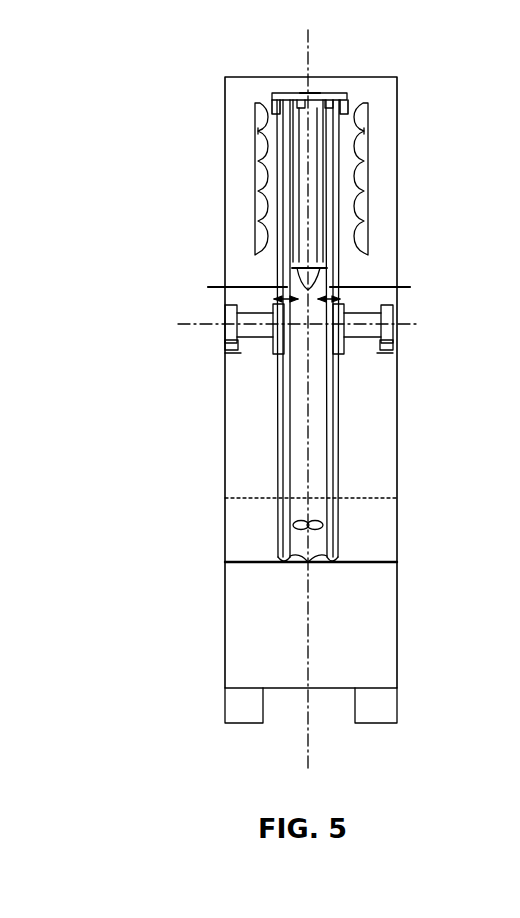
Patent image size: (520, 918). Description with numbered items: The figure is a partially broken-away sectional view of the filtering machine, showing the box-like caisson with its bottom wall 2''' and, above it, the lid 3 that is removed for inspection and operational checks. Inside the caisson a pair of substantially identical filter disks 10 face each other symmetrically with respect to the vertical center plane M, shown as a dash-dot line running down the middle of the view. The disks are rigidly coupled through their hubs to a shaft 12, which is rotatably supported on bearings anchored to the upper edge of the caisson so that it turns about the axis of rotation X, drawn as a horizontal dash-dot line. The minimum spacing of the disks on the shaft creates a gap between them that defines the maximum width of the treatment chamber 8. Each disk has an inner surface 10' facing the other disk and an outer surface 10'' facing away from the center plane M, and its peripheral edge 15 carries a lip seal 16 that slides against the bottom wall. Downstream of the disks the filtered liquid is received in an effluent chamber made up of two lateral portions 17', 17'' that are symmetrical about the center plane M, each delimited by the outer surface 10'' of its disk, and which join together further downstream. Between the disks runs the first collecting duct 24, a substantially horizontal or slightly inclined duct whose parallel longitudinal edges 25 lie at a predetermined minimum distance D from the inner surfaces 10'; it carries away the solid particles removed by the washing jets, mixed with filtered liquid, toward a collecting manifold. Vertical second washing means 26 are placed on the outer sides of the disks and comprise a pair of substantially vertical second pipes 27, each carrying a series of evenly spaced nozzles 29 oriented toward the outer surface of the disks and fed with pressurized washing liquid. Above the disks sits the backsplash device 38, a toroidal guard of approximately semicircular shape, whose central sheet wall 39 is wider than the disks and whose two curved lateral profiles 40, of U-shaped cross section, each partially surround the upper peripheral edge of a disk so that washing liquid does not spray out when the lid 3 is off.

The lid 3 is at (402, 70).
The treatment chamber 8 is at (313, 508).
The filter disk 10 is at (309, 328).
The inner surface 10' is at (392, 407).
The outer surface 10'' is at (310, 482).
The shaft 12 is at (258, 332).
The peripheral edge 15 is at (308, 562).
The lip seal 16 is at (282, 558).
The lateral portion of effluent chamber 17' is at (277, 556).
The lateral portion of effluent chamber 17'' is at (423, 577).
The first collecting duct 24 is at (320, 270).
The longitudinal edge 25 is at (285, 268).
The second washing means 26 is at (372, 204).
The second pipe 27 is at (255, 198).
The nozzle 29 is at (258, 163).
The backsplash device 38 is at (323, 88).
The central sheet wall 39 is at (300, 93).
The semicircular profile 40 is at (274, 98).
The bottom wall 2''' is at (282, 344).
The predetermined minimum distance D is at (274, 299).
The axis of rotation X is at (192, 324).
The vertical center plane M is at (312, 752).